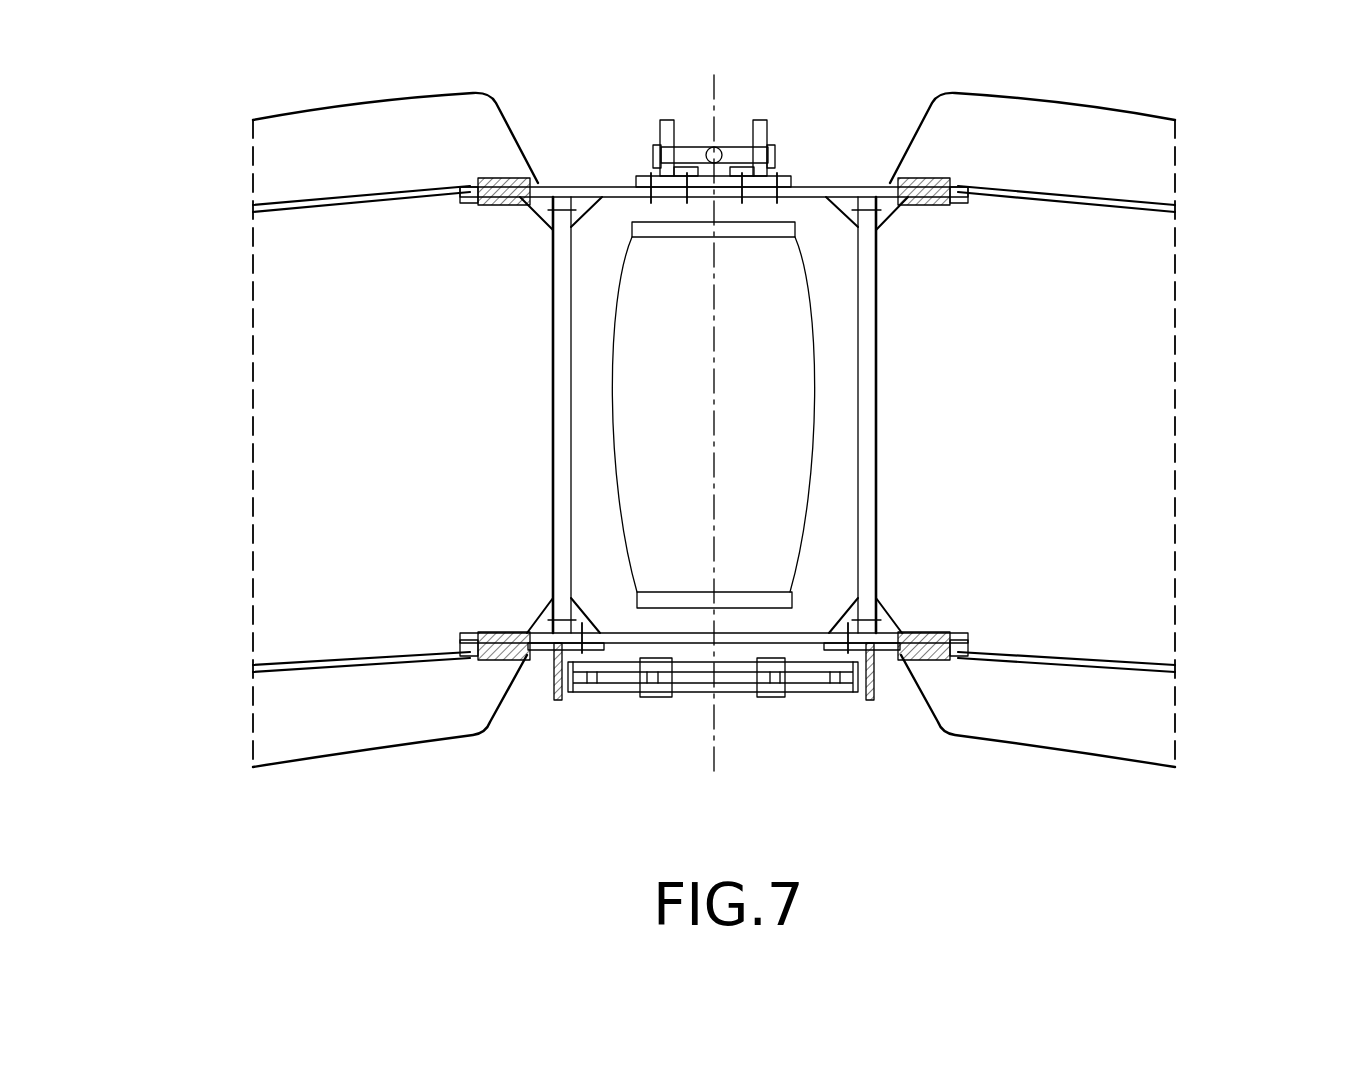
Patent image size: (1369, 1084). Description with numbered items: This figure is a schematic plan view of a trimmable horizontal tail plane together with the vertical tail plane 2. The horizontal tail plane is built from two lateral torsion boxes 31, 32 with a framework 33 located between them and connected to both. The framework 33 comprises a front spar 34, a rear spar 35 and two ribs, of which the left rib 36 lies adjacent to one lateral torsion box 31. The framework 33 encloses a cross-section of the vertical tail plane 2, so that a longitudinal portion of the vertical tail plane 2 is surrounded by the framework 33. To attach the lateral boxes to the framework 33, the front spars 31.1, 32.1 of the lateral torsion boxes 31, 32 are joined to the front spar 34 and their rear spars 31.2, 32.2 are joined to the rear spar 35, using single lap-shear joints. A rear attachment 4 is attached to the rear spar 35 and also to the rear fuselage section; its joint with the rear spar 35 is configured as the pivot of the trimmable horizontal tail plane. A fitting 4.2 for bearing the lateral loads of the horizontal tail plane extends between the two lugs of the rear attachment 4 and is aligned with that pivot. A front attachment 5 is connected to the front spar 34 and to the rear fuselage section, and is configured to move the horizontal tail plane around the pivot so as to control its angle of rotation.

The vertical tail plane 2 is at (777, 268).
The rear attachment 4 is at (562, 700).
The fitting 4.2 is at (845, 690).
The front attachment 5 is at (707, 150).
The lateral torsion box 31 is at (290, 392).
The front spar of lateral torsion box 31.1 is at (253, 210).
The rear spar of lateral torsion box 31.2 is at (253, 668).
The lateral torsion box 32 is at (1135, 390).
The front spar of lateral torsion box 32.1 is at (1175, 210).
The rear spar of lateral torsion box 32.2 is at (1175, 671).
The framework 33 is at (867, 367).
The front spar 34 is at (628, 185).
The rear spar 35 is at (808, 620).
The rib 36 is at (567, 385).